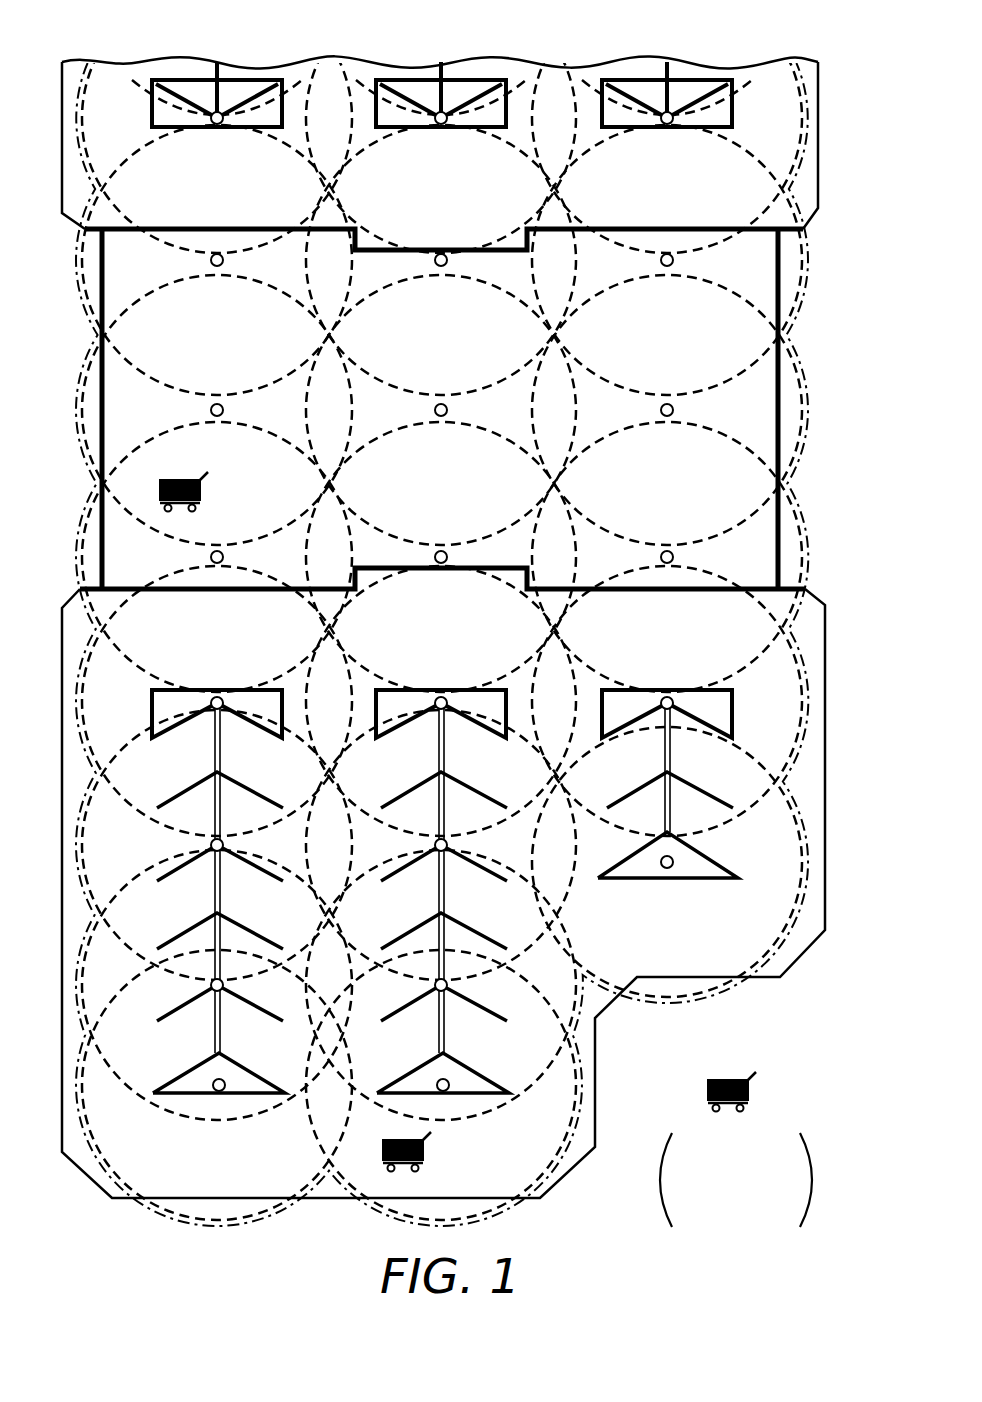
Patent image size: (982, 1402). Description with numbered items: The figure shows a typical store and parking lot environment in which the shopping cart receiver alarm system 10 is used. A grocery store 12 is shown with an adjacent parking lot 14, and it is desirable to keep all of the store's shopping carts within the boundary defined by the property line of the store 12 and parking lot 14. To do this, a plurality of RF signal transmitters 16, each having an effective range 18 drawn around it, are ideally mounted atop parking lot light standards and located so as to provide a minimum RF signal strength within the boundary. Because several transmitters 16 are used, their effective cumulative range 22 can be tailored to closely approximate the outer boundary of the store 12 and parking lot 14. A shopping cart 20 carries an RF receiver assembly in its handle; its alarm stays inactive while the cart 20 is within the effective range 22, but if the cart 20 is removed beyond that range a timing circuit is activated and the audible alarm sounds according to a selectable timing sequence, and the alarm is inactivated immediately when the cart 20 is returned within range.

The shopping cart receiver alarm system 10 is at (384, 44).
The grocery store 12 is at (458, 359).
The parking lot 14 is at (808, 217).
The RF signal transmitter 16 is at (667, 125).
The effective range 18 is at (713, 262).
The shopping cart 20 is at (163, 480).
The effective cumulative range 22 is at (808, 455).